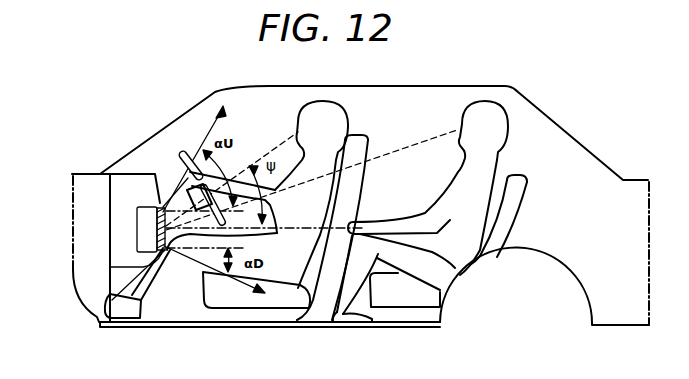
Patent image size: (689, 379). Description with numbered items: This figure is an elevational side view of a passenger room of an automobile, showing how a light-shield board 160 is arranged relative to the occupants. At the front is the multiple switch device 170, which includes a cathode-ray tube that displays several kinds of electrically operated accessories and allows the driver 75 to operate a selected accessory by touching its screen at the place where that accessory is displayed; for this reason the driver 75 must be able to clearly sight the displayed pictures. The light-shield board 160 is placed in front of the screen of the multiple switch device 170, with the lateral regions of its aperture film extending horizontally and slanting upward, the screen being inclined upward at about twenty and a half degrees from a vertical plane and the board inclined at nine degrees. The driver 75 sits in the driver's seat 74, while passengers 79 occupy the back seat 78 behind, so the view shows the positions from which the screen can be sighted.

The multiple switch device 170 is at (143, 228).
The light-shield board 160 is at (172, 248).
The driver's seat 74 is at (237, 300).
The back seat 78 is at (388, 303).
The driver 75 is at (337, 127).
The passengers 79 is at (487, 177).